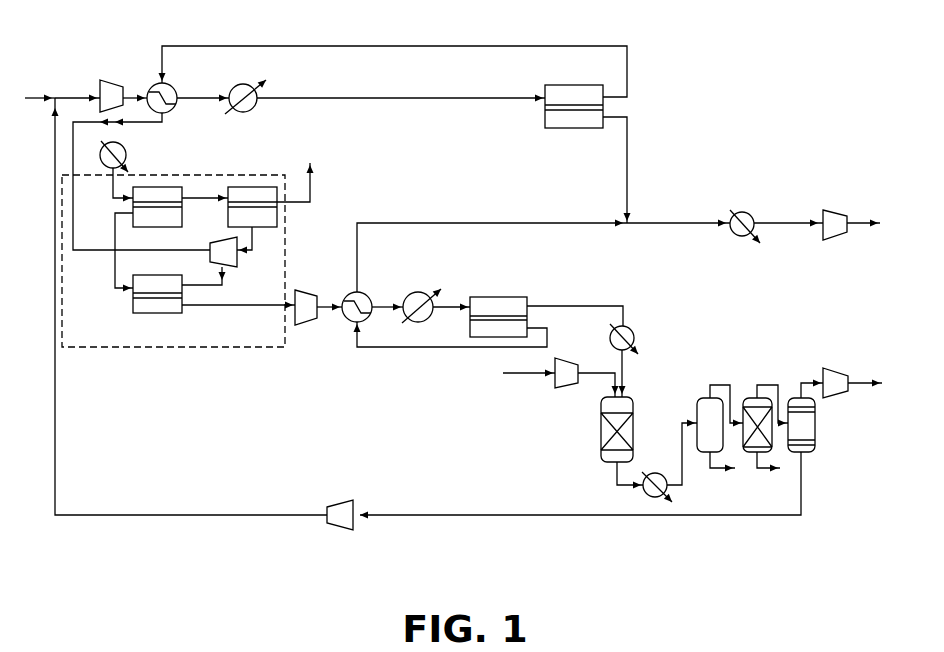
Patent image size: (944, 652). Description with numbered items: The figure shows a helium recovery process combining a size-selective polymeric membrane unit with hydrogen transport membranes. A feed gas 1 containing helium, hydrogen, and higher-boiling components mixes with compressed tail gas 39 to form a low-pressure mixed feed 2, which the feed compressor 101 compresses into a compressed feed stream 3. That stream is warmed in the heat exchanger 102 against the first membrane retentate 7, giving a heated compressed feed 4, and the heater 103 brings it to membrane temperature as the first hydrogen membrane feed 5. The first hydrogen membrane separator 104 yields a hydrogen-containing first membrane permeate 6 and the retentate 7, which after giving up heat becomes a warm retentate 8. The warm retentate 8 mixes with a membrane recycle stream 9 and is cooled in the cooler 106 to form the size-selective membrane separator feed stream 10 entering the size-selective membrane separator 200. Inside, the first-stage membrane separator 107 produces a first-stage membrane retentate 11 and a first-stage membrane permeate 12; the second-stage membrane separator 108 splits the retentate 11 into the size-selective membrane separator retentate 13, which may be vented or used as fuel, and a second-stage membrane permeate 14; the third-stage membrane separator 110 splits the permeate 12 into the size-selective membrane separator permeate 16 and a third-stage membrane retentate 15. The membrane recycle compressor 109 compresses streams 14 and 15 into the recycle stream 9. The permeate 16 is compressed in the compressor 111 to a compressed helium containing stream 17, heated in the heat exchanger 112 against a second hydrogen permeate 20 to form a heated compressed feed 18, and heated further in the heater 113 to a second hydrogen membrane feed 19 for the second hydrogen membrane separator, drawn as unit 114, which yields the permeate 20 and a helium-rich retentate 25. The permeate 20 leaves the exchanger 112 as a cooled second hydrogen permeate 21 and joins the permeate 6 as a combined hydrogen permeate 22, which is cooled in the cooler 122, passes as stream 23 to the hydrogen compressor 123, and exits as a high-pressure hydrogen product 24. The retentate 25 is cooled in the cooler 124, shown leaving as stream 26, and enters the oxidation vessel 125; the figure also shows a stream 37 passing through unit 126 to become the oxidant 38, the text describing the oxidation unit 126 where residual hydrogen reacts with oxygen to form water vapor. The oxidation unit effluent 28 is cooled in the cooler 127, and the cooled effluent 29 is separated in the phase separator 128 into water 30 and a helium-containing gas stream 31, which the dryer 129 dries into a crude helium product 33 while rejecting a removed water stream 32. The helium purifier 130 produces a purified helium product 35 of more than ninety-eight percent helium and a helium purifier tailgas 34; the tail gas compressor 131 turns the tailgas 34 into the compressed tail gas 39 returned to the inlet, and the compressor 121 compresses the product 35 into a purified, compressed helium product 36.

The feed gas 1 is at (40, 91).
The low-pressure mixed feed 2 is at (77, 91).
The compressed feed stream 3 is at (135, 90).
The heated compressed feed 4 is at (203, 90).
The first hydrogen membrane feed 5 is at (401, 90).
The first membrane permeate 6 is at (617, 170).
The first membrane retentate 7 is at (393, 62).
The warm retentate 8 is at (137, 128).
The membrane recycle stream 9 is at (141, 185).
The size-selective membrane separator feed stream 10 is at (110, 185).
The first-stage membrane retentate 11 is at (205, 190).
The first-stage membrane permeate 12 is at (111, 252).
The size-selective membrane separator retentate 13 is at (302, 182).
The second-stage membrane permeate 14 is at (253, 240).
The third-stage membrane retentate 15 is at (213, 279).
The size-selective membrane separator permeate 16 is at (238, 316).
The compressed helium containing stream 17 is at (329, 296).
The heated compressed feed 18 is at (387, 296).
The second hydrogen membrane feed 19 is at (451, 296).
The second hydrogen permeate 20 is at (451, 335).
The cooled second hydrogen permeate 21 is at (492, 248).
The combined hydrogen permeate 22 is at (678, 215).
The cooled effluent stream 23 is at (788, 215).
The high-pressure hydrogen product 24 is at (863, 215).
The helium-rich retentate 25 is at (575, 306).
The cooled overhead stream 26 is at (631, 373).
The oxidation unit effluent 28 is at (618, 476).
The cooled effluent 29 is at (682, 455).
The water 30 is at (721, 476).
The gas stream 31 is at (726, 398).
The removed water stream 32 is at (767, 476).
The crude helium product 33 is at (772, 398).
The helium purifier tailgas 34 is at (589, 485).
The purified helium product 35 is at (810, 381).
The purified, compressed helium product 36 is at (865, 375).
The solvent stream 37 is at (529, 366).
The oxidant 38 is at (598, 376).
The compressed tail gas 39 is at (190, 306).
The feed compressor 101 is at (111, 96).
The heat exchanger 102 is at (170, 108).
The heater 103 is at (249, 105).
The first hydrogen membrane separator 104 is at (574, 106).
The cooler 106 is at (97, 157).
The first-stage membrane separator 107 is at (157, 207).
The second-stage membrane separator 108 is at (252, 207).
The membrane recycle compressor 109 is at (223, 252).
The third-stage membrane separator 110 is at (157, 294).
The compressor 111 is at (306, 307).
The heat exchanger 112 is at (363, 316).
The heater 113 is at (426, 313).
The second reactor 114 is at (498, 317).
The compressor 121 is at (835, 383).
The cooler 122 is at (734, 232).
The hydrogen compressor 123 is at (835, 225).
The cooler 124 is at (632, 337).
The absorber column 125 is at (617, 429).
The oxidation unit 126 is at (566, 373).
The cooler 127 is at (649, 493).
The phase separator 128 is at (710, 425).
The dryer 129 is at (745, 442).
The helium purifier 130 is at (801, 425).
The tail gas compressor 131 is at (340, 515).
The size-selective membrane separator 200 is at (173, 261).